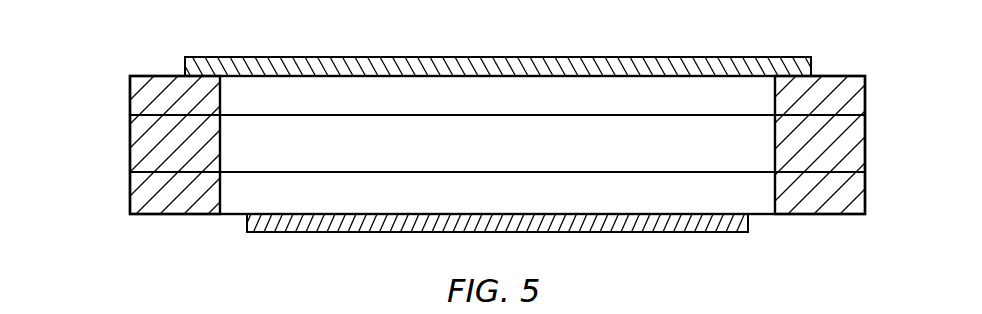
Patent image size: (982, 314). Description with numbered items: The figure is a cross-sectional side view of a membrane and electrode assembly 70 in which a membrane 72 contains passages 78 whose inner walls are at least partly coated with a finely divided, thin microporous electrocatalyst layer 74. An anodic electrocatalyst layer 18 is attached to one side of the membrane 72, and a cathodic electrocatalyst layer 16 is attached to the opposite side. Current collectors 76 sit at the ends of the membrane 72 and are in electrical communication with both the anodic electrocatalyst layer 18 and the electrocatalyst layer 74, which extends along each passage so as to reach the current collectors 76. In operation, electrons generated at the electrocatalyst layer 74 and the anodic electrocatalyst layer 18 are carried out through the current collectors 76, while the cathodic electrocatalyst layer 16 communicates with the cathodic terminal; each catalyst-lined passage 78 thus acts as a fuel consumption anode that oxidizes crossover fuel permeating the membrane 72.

The membrane and electrode assembly 70 is at (95, 77).
The membrane 72 is at (327, 85).
The passages 78 is at (497, 157).
The electrocatalyst layer 74 is at (633, 168).
The anodic electrocatalyst layer 18 is at (538, 56).
The cathodic electrocatalyst layer 16 is at (587, 232).
The current collectors 76 is at (148, 195).